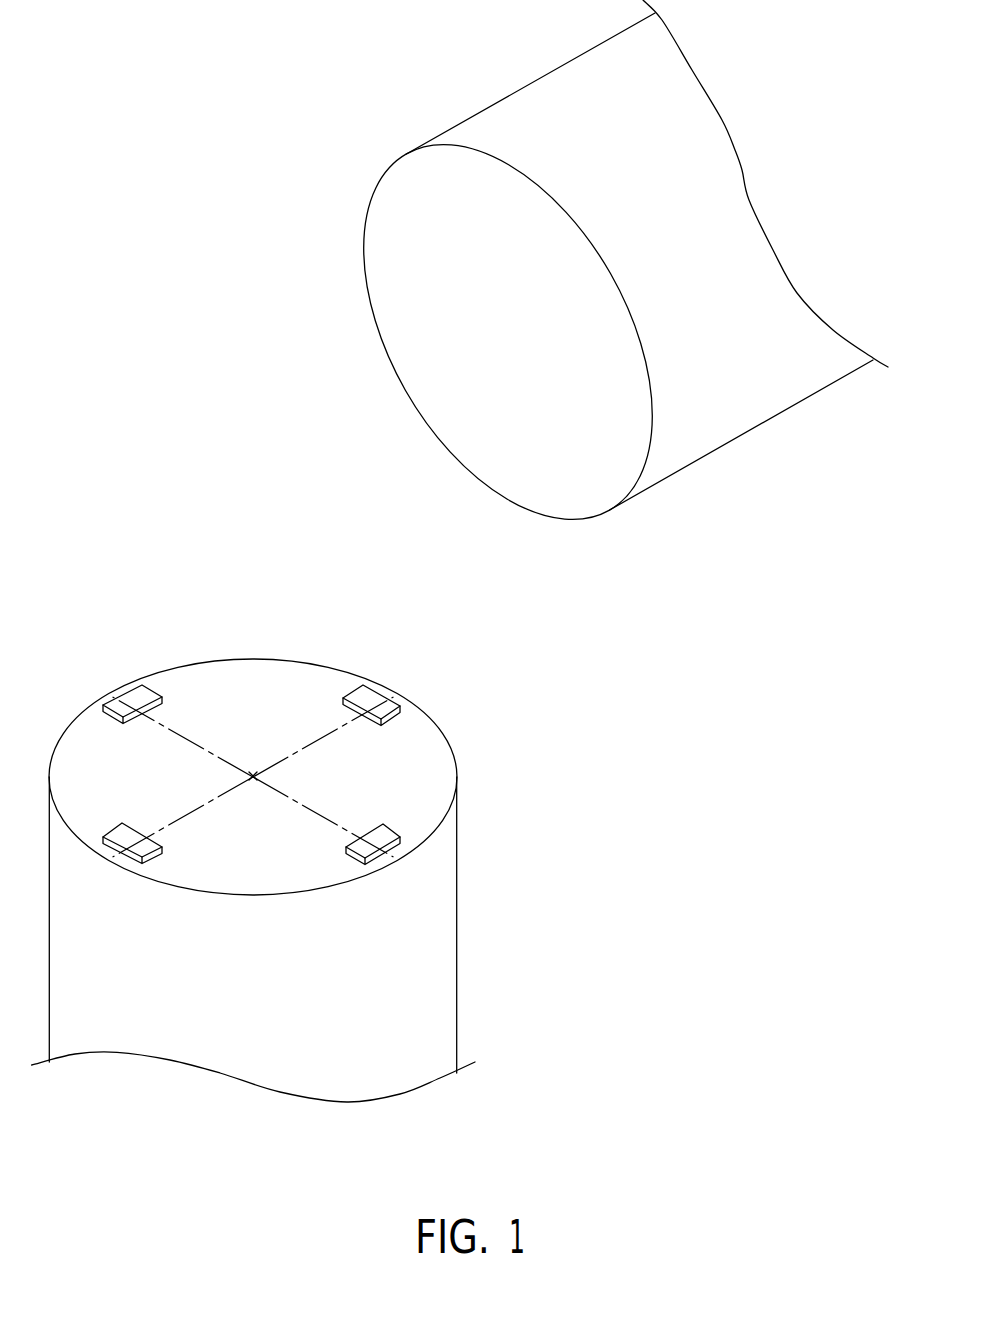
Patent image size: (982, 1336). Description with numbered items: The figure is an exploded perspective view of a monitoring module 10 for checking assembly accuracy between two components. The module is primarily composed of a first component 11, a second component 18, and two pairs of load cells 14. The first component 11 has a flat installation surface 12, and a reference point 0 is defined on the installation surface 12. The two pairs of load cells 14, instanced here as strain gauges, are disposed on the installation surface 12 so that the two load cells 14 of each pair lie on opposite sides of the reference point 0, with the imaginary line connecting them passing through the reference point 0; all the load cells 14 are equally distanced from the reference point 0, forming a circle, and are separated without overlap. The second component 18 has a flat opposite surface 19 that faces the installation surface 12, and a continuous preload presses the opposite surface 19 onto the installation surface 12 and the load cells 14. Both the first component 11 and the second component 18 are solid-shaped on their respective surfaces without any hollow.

The monitoring module 10 is at (190, 87).
The first component 11 is at (457, 936).
The installation surface 12 is at (435, 773).
The load cells 14 is at (125, 684).
The reference point 0 is at (253, 776).
The second component 18 is at (743, 435).
The opposite surface 19 is at (545, 445).